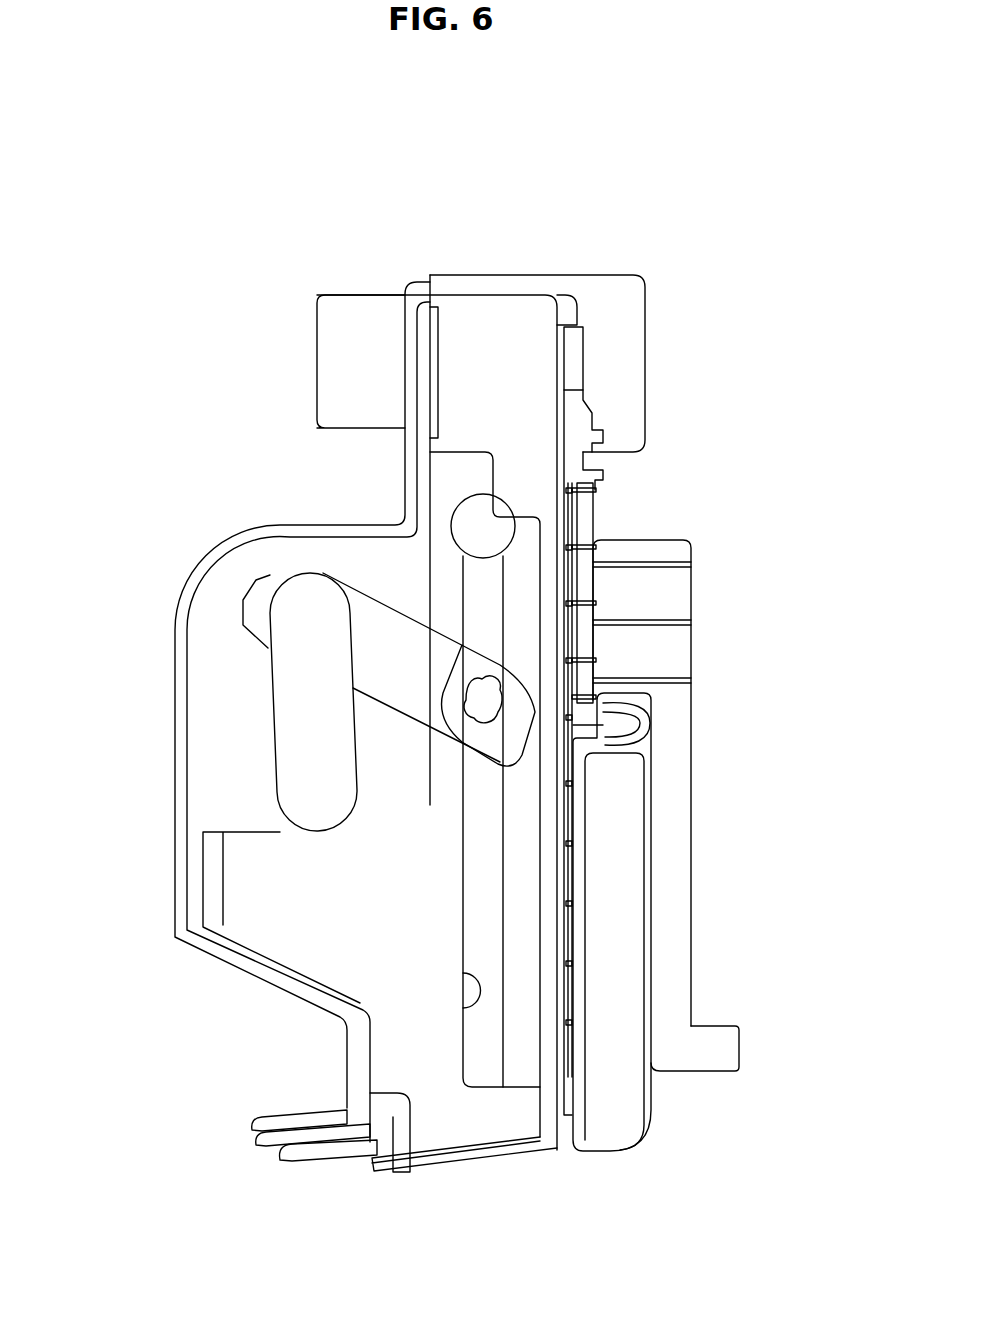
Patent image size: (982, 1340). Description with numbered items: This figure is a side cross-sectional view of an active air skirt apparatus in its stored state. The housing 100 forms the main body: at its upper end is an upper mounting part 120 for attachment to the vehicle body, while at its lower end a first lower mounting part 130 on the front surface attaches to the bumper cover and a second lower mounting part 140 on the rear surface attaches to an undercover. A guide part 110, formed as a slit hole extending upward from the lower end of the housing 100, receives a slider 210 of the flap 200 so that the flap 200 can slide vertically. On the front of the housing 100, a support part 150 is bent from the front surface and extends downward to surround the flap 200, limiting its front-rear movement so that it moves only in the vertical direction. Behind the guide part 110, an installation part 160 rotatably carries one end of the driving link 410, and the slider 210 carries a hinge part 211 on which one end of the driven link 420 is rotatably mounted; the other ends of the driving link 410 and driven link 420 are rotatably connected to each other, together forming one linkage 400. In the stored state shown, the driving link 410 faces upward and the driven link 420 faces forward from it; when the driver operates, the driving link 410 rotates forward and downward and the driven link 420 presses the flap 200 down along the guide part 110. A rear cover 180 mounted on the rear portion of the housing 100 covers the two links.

The housing 100 is at (490, 247).
The guide part 110 is at (463, 973).
The upper mounting part 120 is at (618, 366).
The first lower mounting part 130 is at (713, 1052).
The second lower mounting part 140 is at (267, 1148).
The support part 150 is at (663, 776).
The installation part 160 is at (255, 910).
The rear cover 180 is at (203, 578).
The flap 200 is at (612, 912).
The slider 210 is at (483, 592).
The hinge part 211 is at (483, 705).
The linkage 400 is at (268, 354).
The driving link 410 is at (313, 622).
The driven link 420 is at (398, 668).